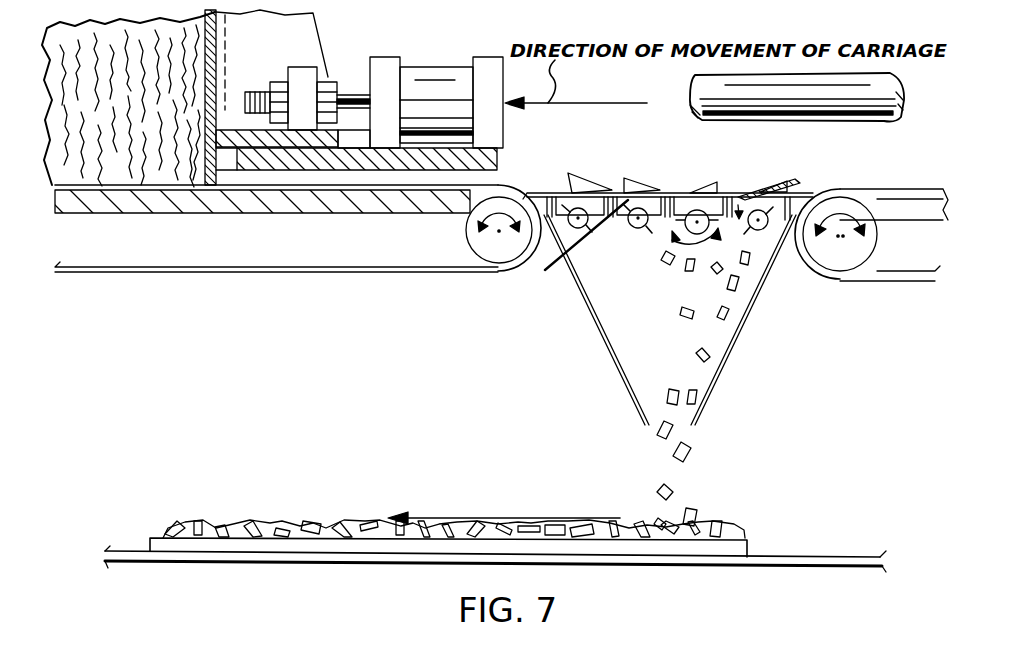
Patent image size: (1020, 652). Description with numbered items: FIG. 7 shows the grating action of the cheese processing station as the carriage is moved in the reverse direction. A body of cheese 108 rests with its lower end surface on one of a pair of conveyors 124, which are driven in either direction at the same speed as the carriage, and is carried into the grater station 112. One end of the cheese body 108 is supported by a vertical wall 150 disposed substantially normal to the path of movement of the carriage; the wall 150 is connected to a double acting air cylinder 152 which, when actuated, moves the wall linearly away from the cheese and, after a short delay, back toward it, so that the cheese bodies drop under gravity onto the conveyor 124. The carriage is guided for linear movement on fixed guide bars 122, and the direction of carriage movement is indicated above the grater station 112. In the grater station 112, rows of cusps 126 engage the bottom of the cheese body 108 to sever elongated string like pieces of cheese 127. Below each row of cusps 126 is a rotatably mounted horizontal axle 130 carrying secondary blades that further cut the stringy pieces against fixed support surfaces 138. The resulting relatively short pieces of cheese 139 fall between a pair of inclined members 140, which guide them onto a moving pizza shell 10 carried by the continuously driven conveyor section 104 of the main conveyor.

The pizza shell 10 is at (740, 535).
The conveyor section 104 is at (830, 556).
The body of cheese 108 is at (134, 155).
The grater station 112 is at (740, 160).
The fixed guide bar 122 is at (690, 78).
The conveyor 124 is at (886, 282).
The cusp 126 is at (733, 190).
The elongated string like piece of cheese 127 is at (789, 183).
The horizontal axle 130 is at (636, 231).
The fixed support surface 138 is at (567, 253).
The short piece of cheese 139 is at (740, 272).
The inclined member 140 is at (716, 384).
The vertical wall 150 is at (212, 80).
The double acting air cylinder 152 is at (428, 74).